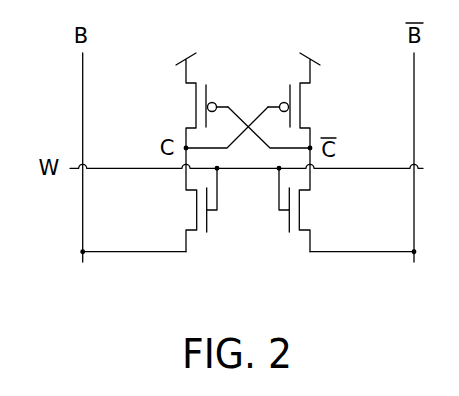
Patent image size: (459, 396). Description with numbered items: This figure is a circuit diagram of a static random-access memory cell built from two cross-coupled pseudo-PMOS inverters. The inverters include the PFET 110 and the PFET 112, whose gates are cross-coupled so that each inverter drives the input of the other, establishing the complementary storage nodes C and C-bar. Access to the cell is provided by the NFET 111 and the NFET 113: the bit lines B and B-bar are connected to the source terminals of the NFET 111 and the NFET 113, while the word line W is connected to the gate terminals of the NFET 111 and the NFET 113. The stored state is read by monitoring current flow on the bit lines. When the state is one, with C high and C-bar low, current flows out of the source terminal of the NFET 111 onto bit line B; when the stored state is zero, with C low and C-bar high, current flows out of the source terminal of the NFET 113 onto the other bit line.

The PFET 110 is at (179, 104).
The NFET 111 is at (179, 207).
The PFET 112 is at (317, 104).
The NFET 113 is at (317, 207).